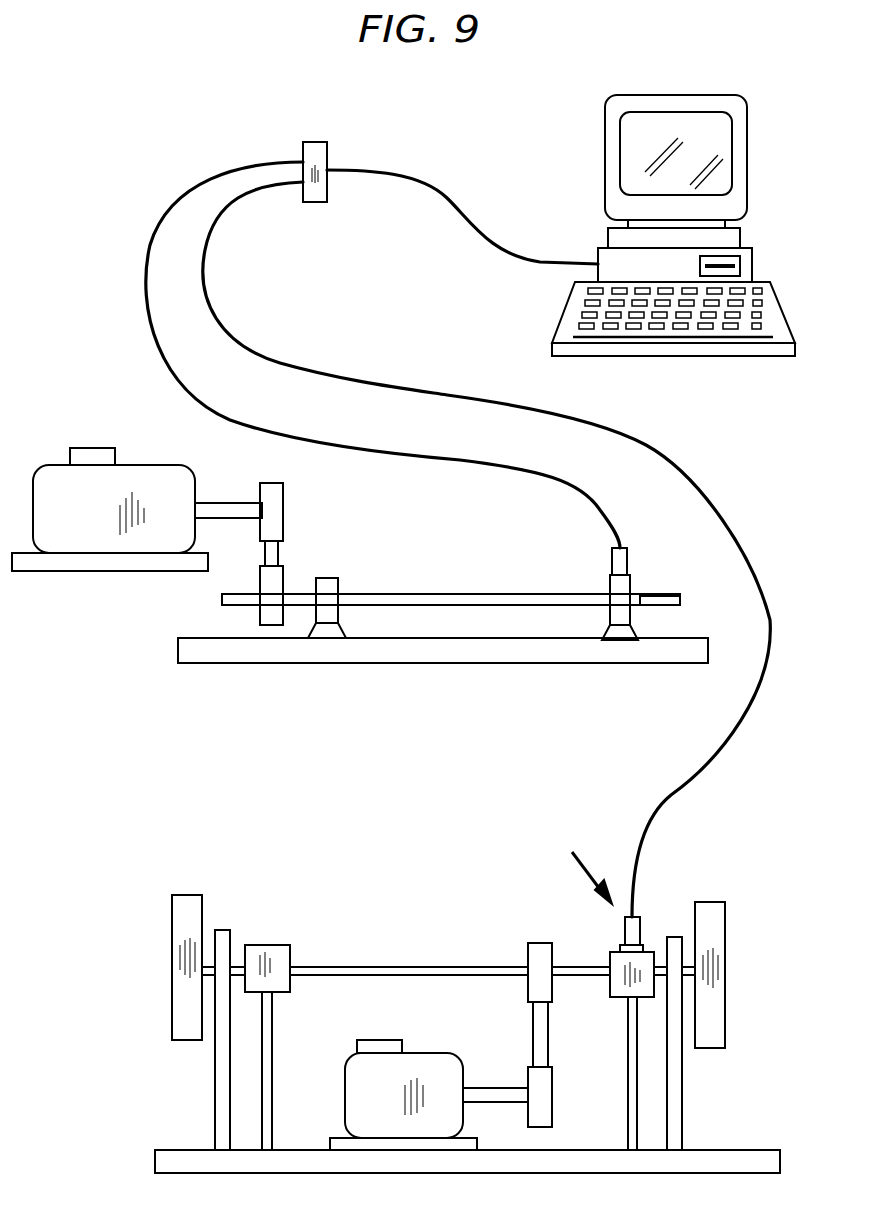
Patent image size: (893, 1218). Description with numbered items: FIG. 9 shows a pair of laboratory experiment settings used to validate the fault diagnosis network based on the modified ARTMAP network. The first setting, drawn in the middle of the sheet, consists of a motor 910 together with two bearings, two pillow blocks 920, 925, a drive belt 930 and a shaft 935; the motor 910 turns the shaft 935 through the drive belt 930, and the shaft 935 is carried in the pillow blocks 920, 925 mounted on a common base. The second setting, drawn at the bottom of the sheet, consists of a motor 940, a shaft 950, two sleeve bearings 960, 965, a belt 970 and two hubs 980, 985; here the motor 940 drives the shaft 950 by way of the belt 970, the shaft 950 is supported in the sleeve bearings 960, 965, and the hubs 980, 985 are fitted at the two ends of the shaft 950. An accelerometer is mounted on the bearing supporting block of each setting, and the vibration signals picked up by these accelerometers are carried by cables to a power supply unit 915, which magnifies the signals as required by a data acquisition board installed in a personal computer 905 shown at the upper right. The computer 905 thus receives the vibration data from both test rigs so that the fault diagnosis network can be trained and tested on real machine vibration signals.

The personal computer 905 is at (745, 240).
The motor 910 is at (138, 465).
The power supply unit 915 is at (306, 142).
The pillow block 920 is at (632, 615).
The pillow block 925 is at (327, 578).
The drive belt 930 is at (264, 483).
The shaft 935 is at (650, 598).
The motor 940 is at (418, 1053).
The shaft 950 is at (387, 967).
The sleeve bearing 960 is at (270, 945).
The sleeve bearing 965 is at (610, 952).
The belt 970 is at (552, 1042).
The hub 980 is at (172, 960).
The hub 985 is at (725, 967).